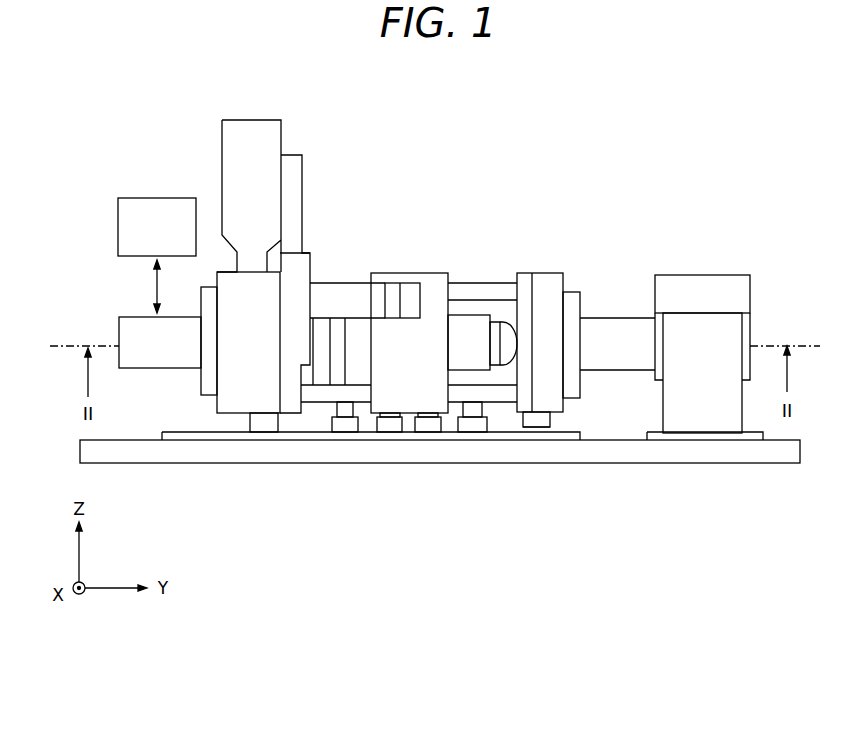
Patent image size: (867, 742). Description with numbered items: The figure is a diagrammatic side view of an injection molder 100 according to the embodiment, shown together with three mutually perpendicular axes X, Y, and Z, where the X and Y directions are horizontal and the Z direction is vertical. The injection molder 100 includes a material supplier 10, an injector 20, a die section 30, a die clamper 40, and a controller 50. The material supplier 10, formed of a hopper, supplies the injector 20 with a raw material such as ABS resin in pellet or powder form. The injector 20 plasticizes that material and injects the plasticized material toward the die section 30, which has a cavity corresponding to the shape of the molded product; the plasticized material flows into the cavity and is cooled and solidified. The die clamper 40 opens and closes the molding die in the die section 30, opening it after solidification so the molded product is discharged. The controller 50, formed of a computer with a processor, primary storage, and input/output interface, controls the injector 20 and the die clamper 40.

The material supplier 10 is at (190, 126).
The injector 20 is at (107, 326).
The die section 30 is at (492, 256).
The die clamper 40 is at (728, 258).
The controller 50 is at (144, 214).
The injection molder 100 is at (679, 210).